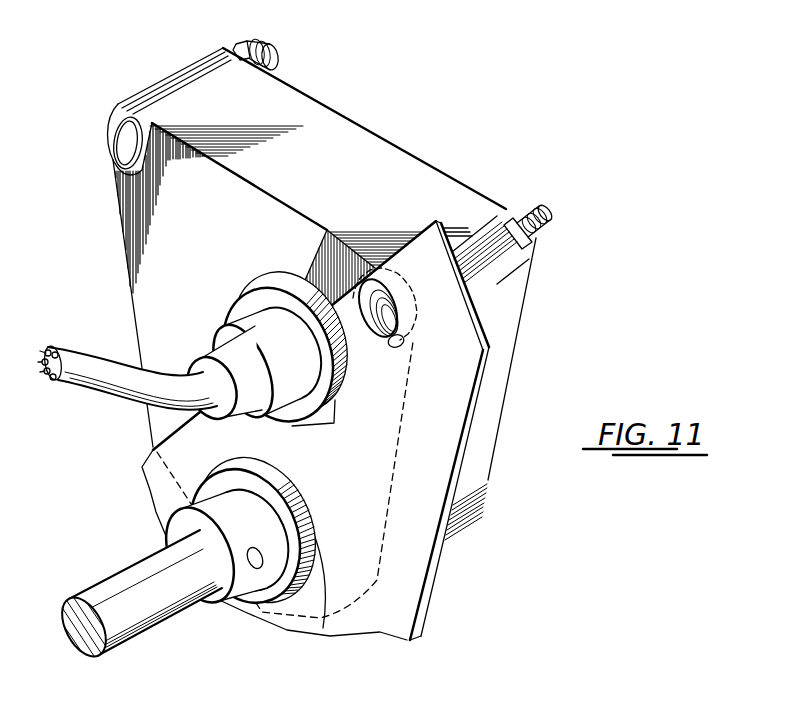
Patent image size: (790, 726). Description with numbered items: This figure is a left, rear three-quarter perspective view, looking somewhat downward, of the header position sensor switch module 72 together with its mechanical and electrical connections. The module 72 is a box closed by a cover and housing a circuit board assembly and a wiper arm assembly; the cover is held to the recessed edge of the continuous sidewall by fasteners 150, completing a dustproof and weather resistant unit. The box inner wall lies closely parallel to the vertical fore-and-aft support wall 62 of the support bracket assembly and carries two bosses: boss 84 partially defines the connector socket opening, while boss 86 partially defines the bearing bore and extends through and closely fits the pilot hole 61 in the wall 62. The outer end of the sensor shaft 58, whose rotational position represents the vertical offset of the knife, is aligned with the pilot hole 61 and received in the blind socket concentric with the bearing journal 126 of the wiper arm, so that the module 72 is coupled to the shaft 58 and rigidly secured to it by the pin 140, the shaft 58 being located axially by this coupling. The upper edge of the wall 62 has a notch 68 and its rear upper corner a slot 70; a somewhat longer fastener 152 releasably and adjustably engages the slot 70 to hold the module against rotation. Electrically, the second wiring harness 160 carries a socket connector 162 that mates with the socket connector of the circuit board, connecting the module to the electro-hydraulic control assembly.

The shaft 58 is at (151, 603).
The pilot hole 61 is at (321, 618).
The support wall 62 is at (473, 407).
The notch 68 is at (336, 418).
The slot 70 is at (402, 350).
The header position sensor switch module 72 is at (453, 545).
The boss 84 is at (273, 284).
The boss 86 is at (287, 512).
The bearing journal 126 is at (213, 605).
The pin 140 is at (254, 565).
The fasteners 150 is at (280, 50).
The fastener 152 is at (474, 231).
The second wiring harness 160 is at (124, 366).
The socket connector 162 is at (212, 342).